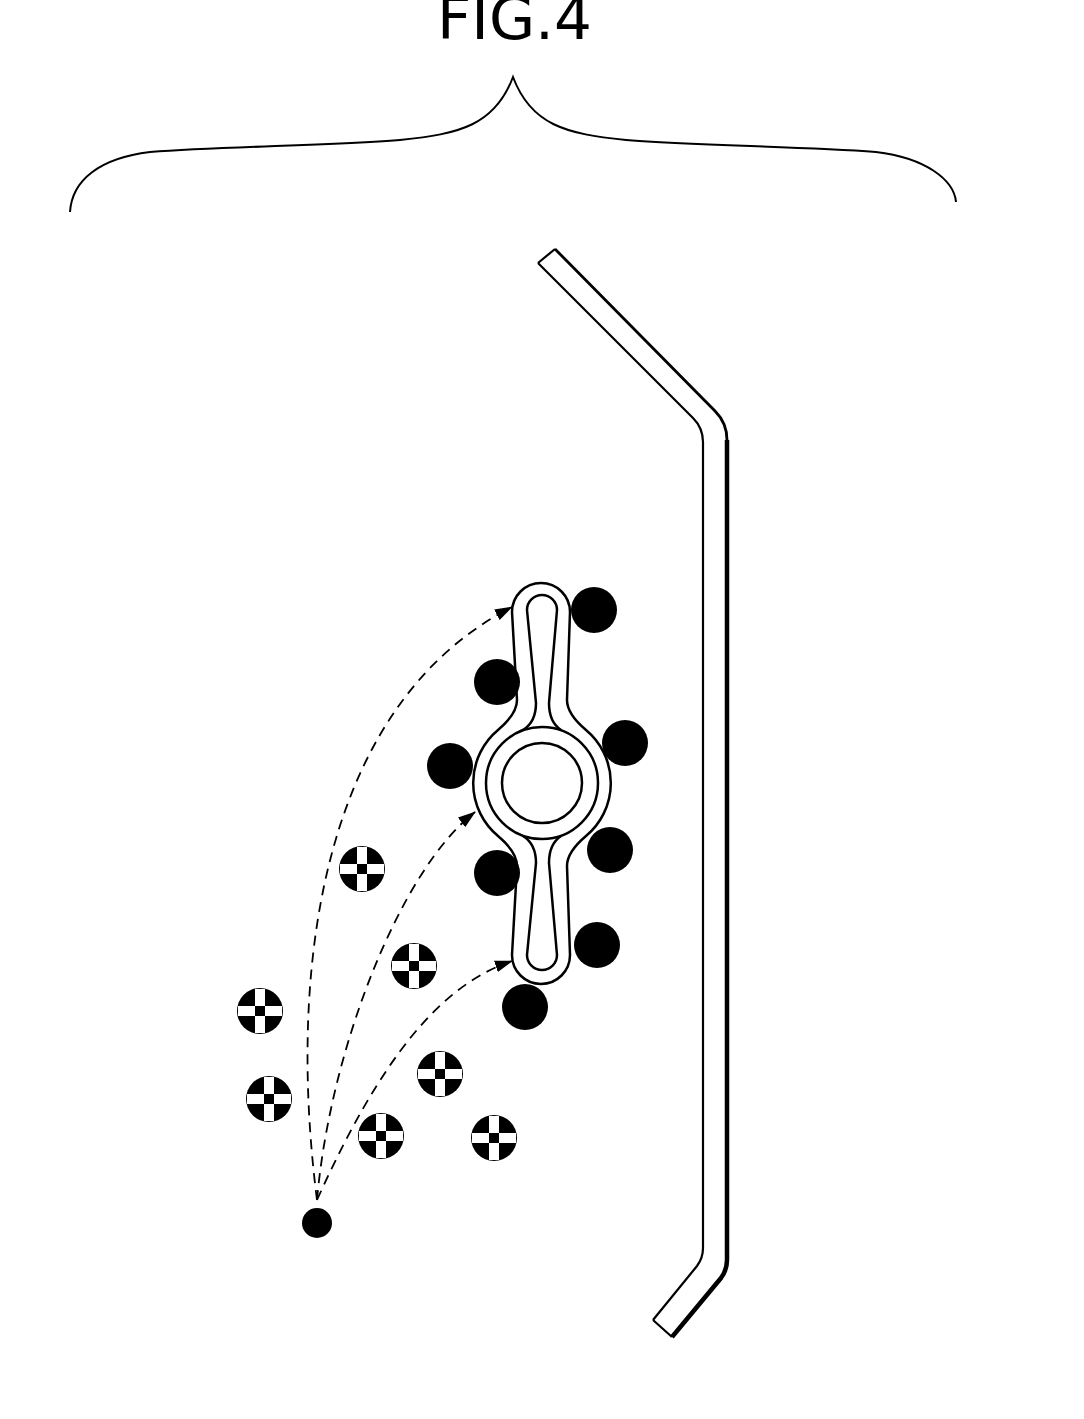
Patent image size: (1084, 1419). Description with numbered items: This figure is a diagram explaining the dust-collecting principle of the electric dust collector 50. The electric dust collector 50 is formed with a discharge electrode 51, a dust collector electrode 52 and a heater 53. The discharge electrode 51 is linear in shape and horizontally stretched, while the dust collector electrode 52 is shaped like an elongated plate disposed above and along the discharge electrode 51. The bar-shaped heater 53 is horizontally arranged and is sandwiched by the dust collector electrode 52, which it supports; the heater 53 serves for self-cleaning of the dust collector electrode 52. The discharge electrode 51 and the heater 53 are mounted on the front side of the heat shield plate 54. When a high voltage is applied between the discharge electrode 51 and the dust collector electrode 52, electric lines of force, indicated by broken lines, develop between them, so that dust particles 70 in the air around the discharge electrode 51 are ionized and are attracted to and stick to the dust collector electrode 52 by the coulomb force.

The electric dust collector 50 is at (669, 793).
The discharge electrode 51 is at (304, 1230).
The dust collector electrode 52 is at (577, 783).
The heater 53 is at (560, 787).
The heat shield plate 54 is at (730, 883).
The dust particles 70 is at (598, 588).